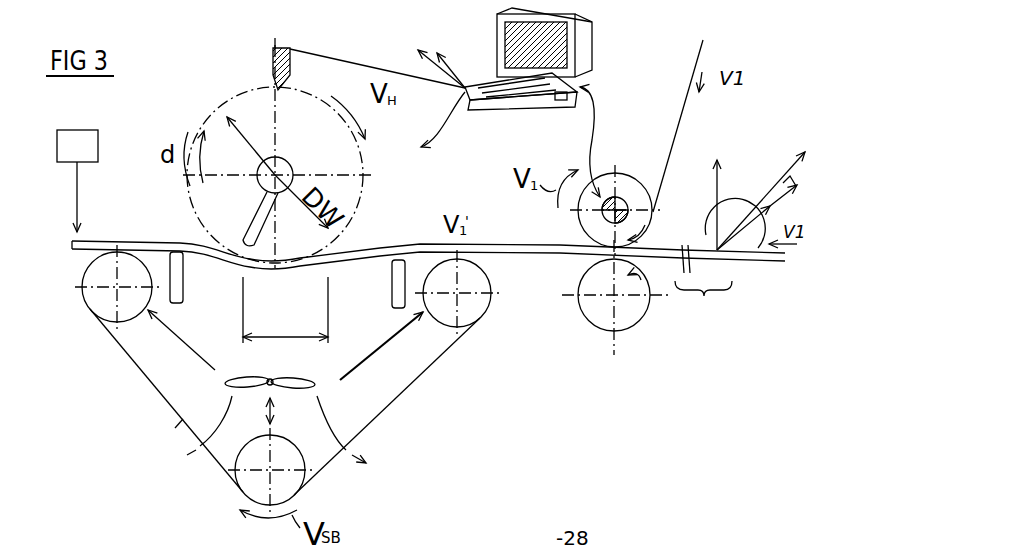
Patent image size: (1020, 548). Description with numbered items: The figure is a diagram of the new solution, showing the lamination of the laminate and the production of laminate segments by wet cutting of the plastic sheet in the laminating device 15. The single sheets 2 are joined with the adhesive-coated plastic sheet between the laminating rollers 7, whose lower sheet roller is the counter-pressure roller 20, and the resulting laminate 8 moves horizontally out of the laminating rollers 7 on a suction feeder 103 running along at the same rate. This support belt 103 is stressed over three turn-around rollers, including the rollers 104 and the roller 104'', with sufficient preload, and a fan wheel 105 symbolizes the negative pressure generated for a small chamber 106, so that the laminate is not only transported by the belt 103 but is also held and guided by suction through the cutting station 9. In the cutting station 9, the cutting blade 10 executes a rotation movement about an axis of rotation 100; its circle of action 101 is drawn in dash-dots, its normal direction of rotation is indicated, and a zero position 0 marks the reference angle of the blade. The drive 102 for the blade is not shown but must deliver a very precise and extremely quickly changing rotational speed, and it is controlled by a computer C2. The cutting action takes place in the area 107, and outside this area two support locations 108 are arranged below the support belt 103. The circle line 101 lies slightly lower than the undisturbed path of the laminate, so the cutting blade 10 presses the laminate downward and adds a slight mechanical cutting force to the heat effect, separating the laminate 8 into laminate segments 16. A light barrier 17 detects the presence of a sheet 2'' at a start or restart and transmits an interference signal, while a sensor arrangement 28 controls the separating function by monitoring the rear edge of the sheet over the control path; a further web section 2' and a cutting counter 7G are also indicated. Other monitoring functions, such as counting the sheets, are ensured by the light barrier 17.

The single sheets 2 is at (428, 282).
The web section 2' is at (656, 315).
The sheet 2'' is at (527, 295).
The laminating rollers 7 is at (677, 319).
The cutting counter 7G is at (628, 208).
The laminate 8 is at (515, 246).
The cutting station 9 is at (238, 88).
The zero position 0 is at (285, 94).
The cutting blade 10 is at (252, 212).
The laminating device 15 is at (641, 190).
The laminate segments 16 is at (110, 240).
The light barrier 17 is at (82, 131).
The counter-pressure roller 20 is at (606, 323).
The sensor arrangement 28 is at (769, 156).
The axis of rotation 100 is at (293, 160).
The circle of action 101 is at (356, 206).
The drive 102 is at (422, 130).
The suction feeder 103 is at (400, 403).
The turn-around rollers 104 is at (379, 382).
The turn-around roller 104'' is at (102, 294).
The fan wheel 105 is at (166, 400).
The small chamber 106 is at (308, 371).
The area 107 is at (286, 336).
The support locations 108 is at (183, 297).
The computer C2 is at (578, 62).